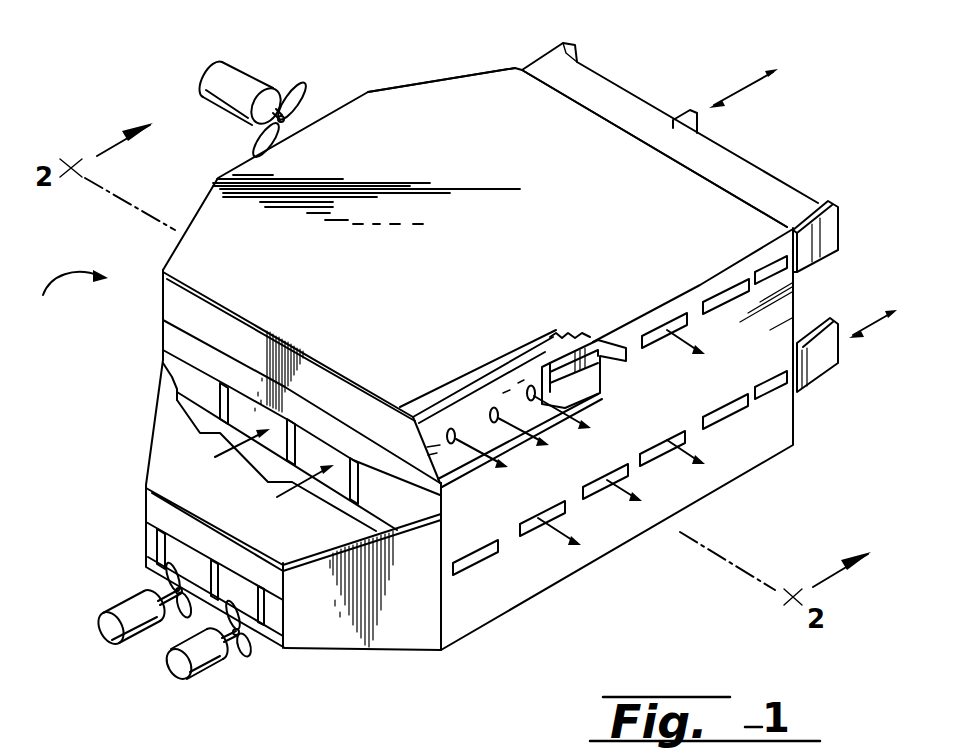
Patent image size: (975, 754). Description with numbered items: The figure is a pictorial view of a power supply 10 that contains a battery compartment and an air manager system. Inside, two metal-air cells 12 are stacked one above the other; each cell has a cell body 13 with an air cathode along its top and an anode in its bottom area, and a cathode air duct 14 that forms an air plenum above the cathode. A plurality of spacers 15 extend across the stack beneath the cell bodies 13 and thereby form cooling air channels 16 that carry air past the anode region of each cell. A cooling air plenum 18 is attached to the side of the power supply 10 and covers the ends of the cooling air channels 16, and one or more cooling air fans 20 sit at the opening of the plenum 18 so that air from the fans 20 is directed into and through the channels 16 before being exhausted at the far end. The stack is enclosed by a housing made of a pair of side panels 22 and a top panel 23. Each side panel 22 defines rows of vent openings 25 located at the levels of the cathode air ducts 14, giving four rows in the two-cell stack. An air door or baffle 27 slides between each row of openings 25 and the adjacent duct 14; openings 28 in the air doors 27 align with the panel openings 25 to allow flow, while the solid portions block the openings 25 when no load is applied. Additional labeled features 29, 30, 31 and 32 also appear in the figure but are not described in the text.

The power supply 10 is at (69, 298).
The metal-air cell 12 is at (170, 327).
The cell body 13 is at (192, 347).
The cathode air duct 14 is at (433, 418).
The spacer 15 is at (303, 440).
The cooling air channel 16 is at (248, 398).
The cooling air plenum 18 is at (387, 643).
The cooling air fan 20 is at (210, 663).
The side panel 22 is at (488, 606).
The top panel 23 is at (393, 311).
The vent opening 25 is at (683, 312).
The air door 27 is at (825, 252).
The opening in air door 28 is at (552, 366).
The holes 29 is at (530, 387).
The rail 30 is at (640, 102).
The roof 31 is at (432, 82).
The fan motor 32 is at (243, 77).